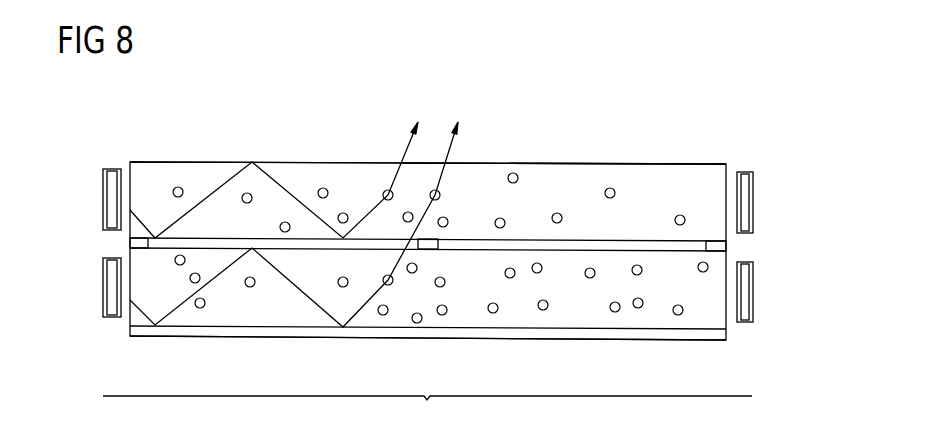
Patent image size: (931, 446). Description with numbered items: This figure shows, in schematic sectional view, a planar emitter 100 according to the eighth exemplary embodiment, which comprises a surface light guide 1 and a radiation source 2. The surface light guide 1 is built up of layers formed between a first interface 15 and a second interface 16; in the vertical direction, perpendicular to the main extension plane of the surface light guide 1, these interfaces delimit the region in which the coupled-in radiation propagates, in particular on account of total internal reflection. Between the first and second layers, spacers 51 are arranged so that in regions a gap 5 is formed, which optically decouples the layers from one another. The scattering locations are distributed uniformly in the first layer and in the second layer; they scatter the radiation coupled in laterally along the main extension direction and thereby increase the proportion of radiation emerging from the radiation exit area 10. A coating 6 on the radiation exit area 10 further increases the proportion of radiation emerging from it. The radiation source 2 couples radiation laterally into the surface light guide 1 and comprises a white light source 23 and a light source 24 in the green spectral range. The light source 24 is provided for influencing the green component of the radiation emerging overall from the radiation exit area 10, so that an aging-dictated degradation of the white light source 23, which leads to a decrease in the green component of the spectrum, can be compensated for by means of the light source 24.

The surface light guide 1 is at (657, 146).
The radiation source 2 is at (112, 158).
The gap 5 is at (630, 240).
The coating 6 is at (128, 334).
The radiation exit area 10 is at (281, 161).
The first interface 15 is at (551, 162).
The second interface 16 is at (428, 329).
The white light source 23 is at (107, 200).
The light source in the green spectral range 24 is at (107, 287).
The spacers 51 is at (130, 243).
The planar emitter 100 is at (427, 417).